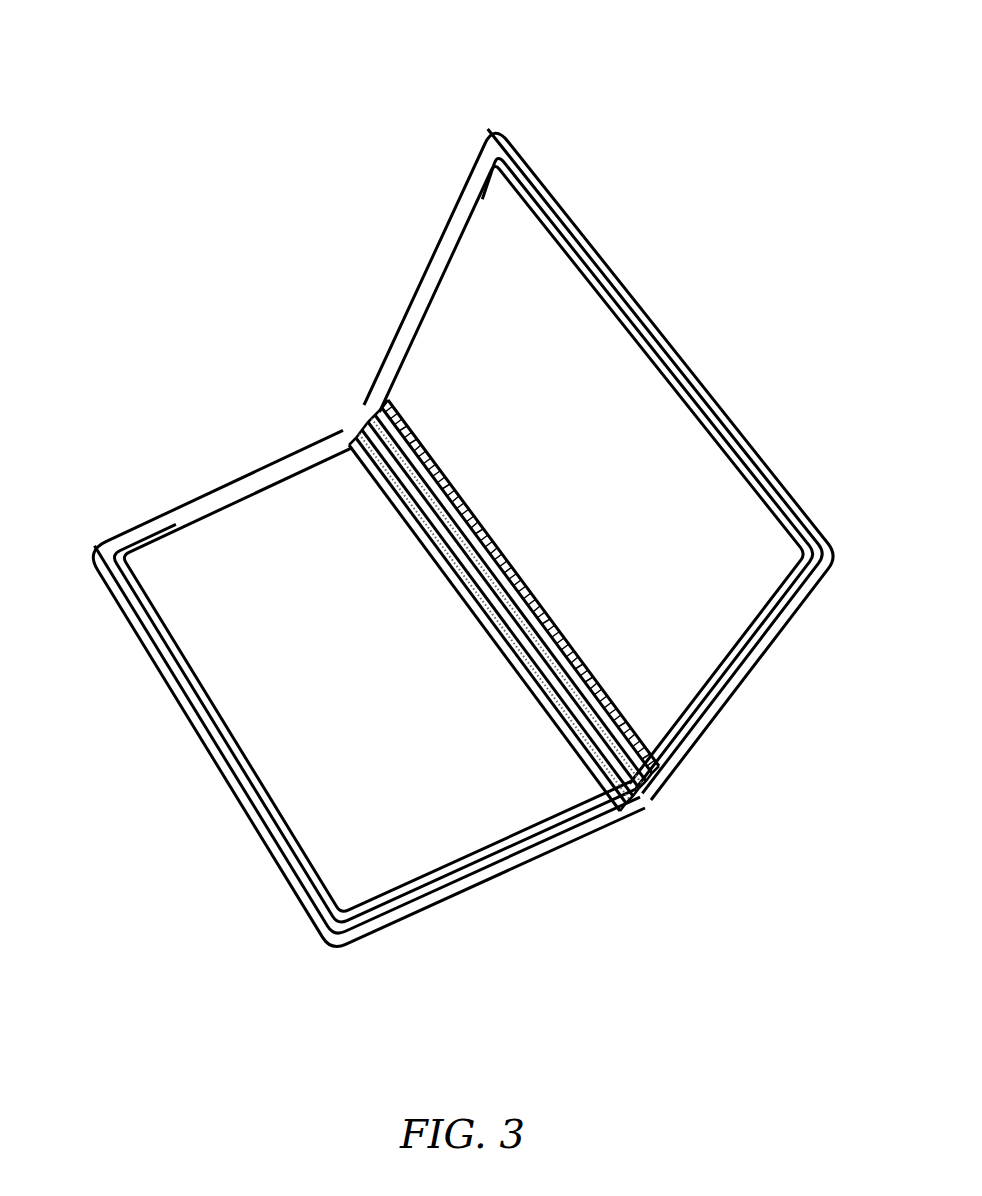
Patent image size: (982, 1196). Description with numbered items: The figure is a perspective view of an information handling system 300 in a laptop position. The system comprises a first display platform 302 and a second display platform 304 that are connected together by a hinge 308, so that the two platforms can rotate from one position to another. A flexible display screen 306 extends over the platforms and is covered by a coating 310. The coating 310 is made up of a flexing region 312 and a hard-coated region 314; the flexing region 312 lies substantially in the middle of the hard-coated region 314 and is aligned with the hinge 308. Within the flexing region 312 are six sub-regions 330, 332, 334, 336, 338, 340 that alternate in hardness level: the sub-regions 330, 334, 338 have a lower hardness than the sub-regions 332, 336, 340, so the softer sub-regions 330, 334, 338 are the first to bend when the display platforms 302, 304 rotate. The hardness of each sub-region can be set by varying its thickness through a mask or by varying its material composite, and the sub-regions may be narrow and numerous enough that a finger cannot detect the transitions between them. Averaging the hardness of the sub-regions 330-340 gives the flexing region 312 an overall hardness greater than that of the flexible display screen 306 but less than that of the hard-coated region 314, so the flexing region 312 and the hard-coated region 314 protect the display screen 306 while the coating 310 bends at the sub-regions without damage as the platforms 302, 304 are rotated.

The information handling system 300 is at (733, 60).
The first display platform 302 is at (440, 246).
The second display platform 304 is at (444, 910).
The flexible display screen 306 is at (118, 554).
The hinge 308 is at (637, 783).
The coating 310 is at (193, 528).
The flexing region 312 is at (362, 363).
The hard-coated region 314 is at (528, 252).
The sub-region 330 is at (356, 445).
The sub-region 332 is at (362, 431).
The sub-region 334 is at (603, 797).
The sub-region 336 is at (627, 793).
The sub-region 338 is at (652, 783).
The sub-region 340 is at (660, 767).